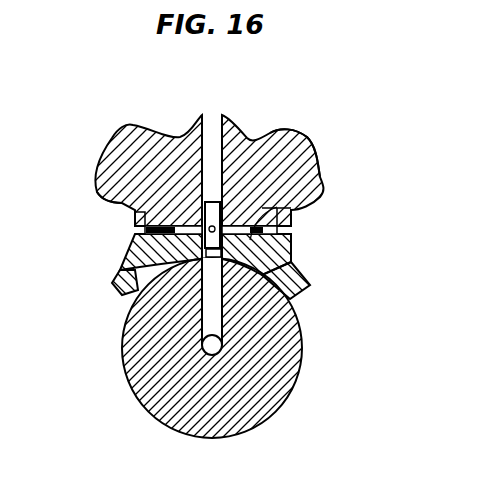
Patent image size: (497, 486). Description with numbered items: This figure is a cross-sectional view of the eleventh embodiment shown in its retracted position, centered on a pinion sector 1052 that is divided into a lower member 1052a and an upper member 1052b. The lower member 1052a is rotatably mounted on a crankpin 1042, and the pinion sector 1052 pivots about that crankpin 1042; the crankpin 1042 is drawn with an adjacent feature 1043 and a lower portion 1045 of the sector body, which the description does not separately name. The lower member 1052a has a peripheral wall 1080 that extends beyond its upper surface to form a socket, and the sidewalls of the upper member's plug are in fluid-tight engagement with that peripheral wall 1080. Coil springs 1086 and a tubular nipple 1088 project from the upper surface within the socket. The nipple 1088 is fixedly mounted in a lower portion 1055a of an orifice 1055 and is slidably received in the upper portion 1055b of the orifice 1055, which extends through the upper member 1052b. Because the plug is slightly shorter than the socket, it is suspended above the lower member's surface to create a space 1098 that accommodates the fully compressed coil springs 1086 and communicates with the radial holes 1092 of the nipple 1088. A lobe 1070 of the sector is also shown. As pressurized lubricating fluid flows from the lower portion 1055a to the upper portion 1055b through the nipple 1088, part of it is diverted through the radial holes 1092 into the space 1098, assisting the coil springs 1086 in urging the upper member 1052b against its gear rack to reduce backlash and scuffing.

The crankpin 1042 is at (172, 408).
The pivot hole 1043 is at (215, 352).
The lower wedge portion 1045 is at (300, 289).
The pinion sector 1052 is at (329, 208).
The lower member 1052a is at (114, 303).
The upper member 1052b is at (117, 197).
The orifice 1055 is at (212, 121).
The lower portion of the orifice 1055a is at (222, 253).
The upper portion of the orifice 1055b is at (215, 157).
The lobe 1070 is at (324, 152).
The peripheral wall 1080 is at (284, 236).
The coil springs 1086 is at (143, 230).
The tubular nipple 1088 is at (124, 268).
The radial holes 1092 is at (214, 200).
The space 1098 is at (186, 228).